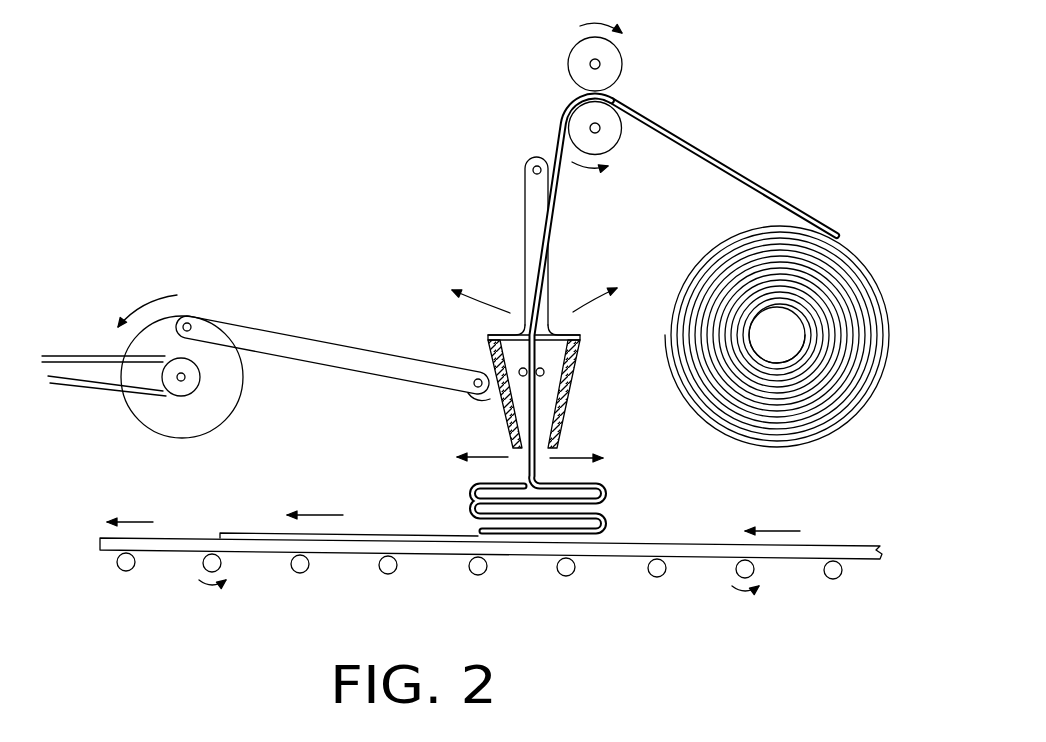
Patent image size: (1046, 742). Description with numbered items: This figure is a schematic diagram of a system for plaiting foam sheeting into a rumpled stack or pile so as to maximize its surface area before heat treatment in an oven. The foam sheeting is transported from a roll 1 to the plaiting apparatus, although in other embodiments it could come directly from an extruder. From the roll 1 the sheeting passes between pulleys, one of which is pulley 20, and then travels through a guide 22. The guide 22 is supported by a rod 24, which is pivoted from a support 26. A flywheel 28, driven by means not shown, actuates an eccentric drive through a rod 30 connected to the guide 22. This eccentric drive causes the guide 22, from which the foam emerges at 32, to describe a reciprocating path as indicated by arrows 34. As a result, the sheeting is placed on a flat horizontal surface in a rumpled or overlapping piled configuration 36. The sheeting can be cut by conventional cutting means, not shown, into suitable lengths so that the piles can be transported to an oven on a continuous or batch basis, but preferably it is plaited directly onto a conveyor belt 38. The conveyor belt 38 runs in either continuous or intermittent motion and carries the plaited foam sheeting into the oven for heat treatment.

The roll 1 is at (868, 268).
The pulley 20 is at (621, 148).
The guide 22 is at (572, 377).
The rod 24 is at (523, 221).
The support 26 is at (622, 71).
The flywheel 28 is at (243, 397).
The rod 30 is at (355, 347).
The foam emergence point 32 is at (558, 448).
The arrows 34 is at (549, 463).
The rumpled or overlapping piled configuration 36 is at (602, 512).
The conveyor belt 38 is at (253, 545).